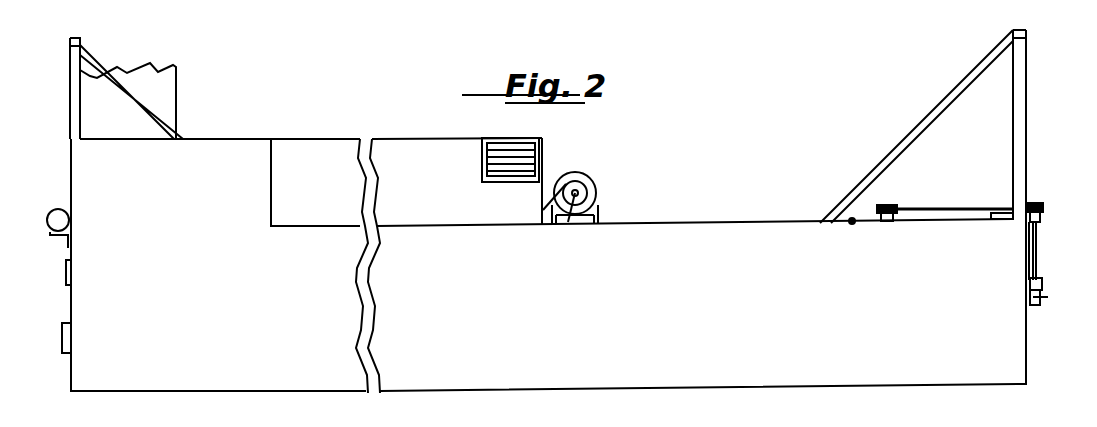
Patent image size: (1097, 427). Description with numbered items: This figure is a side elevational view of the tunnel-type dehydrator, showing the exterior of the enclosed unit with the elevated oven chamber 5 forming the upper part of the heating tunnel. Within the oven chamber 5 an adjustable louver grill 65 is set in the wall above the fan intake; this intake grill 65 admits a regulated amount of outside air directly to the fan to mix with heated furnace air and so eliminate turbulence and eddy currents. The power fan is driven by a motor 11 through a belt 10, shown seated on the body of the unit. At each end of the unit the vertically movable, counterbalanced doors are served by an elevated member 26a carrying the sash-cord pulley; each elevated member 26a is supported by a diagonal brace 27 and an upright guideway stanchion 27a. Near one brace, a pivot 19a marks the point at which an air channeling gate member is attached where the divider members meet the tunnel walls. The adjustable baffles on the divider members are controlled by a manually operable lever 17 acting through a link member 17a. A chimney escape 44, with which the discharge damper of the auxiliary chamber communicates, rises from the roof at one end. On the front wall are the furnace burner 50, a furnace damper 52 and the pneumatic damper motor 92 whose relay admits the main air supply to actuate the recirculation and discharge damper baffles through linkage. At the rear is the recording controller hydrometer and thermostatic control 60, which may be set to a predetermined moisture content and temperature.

The elevated oven chamber 5 is at (405, 155).
The belt 10 is at (575, 220).
The motor 11 is at (590, 186).
The manually operable lever 17 is at (1046, 297).
The link member 17a is at (978, 209).
The pivot of gate member 19a is at (851, 220).
The elevated member 26a is at (73, 43).
The brace 27 is at (94, 52).
The guideway stanchion 27a is at (71, 73).
The chimney escape 44 is at (166, 88).
The burner 50 is at (62, 340).
The furnace damper 52 is at (66, 270).
The recording controller hydrometer and thermostatic control 60 is at (1037, 306).
The adjustable louver grill 65 is at (528, 161).
The pneumatic damper motor 92 is at (57, 212).